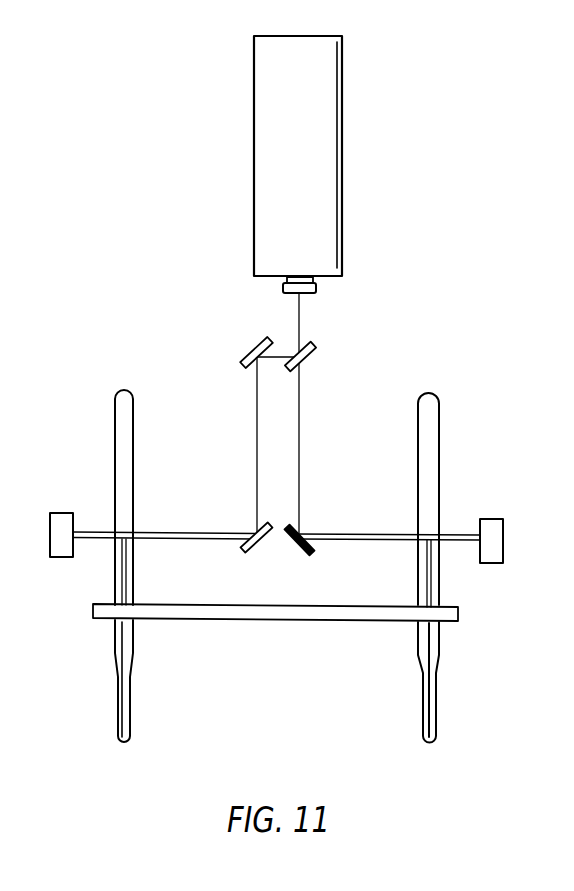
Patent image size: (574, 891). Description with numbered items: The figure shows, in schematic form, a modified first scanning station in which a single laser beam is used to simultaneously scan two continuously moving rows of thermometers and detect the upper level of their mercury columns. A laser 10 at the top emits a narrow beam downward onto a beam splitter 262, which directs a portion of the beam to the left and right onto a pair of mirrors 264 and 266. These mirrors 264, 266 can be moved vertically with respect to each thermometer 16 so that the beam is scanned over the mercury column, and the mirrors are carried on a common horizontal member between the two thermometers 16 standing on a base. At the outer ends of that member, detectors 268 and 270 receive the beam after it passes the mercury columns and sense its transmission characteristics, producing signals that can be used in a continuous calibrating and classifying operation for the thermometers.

The laser 10 is at (335, 179).
The thermometer 16 is at (125, 482).
The beam splitter 262 is at (300, 352).
The mirror 264 is at (303, 552).
The mirror 266 is at (263, 545).
The detector 268 is at (497, 548).
The detector 270 is at (82, 497).